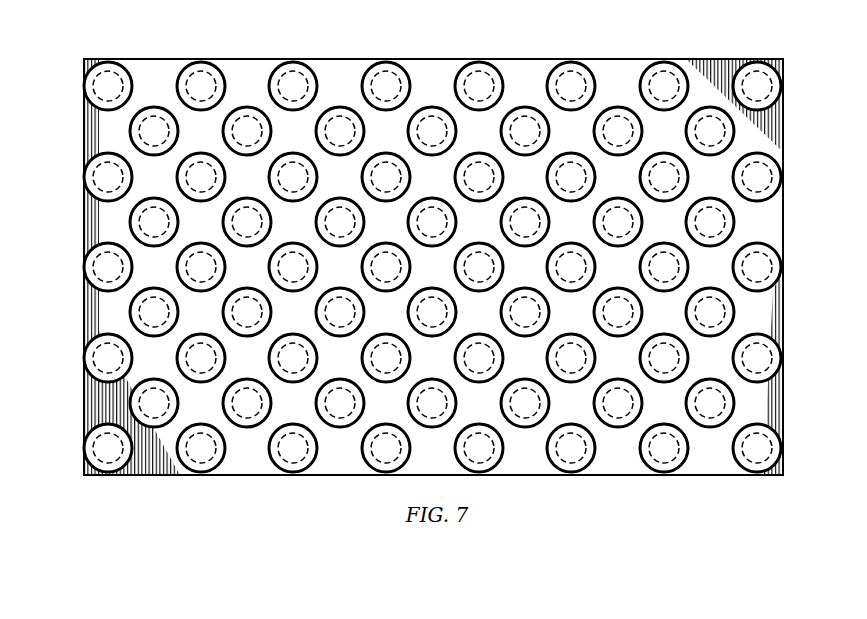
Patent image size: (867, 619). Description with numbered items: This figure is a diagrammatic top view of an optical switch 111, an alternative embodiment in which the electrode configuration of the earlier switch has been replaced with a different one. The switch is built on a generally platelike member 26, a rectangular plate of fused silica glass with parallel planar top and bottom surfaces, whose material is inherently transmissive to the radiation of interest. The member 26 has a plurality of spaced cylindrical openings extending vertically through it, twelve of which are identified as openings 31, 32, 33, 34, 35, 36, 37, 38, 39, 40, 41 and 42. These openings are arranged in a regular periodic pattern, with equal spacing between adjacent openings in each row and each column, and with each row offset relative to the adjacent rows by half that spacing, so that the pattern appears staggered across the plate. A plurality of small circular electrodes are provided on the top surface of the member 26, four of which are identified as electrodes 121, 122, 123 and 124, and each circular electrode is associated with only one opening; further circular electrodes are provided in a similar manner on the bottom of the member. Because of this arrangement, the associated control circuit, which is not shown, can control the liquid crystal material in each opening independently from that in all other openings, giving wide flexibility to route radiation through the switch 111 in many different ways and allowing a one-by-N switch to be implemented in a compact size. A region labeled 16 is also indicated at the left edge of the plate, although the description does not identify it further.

The substrate 16 is at (407, 239).
The platelike member 26 is at (83, 312).
The optical switch 111 is at (712, 55).
The circular electrode 121 is at (137, 60).
The circular electrode 122 is at (229, 60).
The circular electrode 123 is at (321, 60).
The circular electrode 124 is at (414, 60).
The cylindrical opening 31 is at (166, 220).
The cylindrical opening 32 is at (259, 220).
The cylindrical opening 33 is at (352, 220).
The cylindrical opening 34 is at (444, 220).
The cylindrical opening 35 is at (537, 220).
The cylindrical opening 36 is at (630, 220).
The cylindrical opening 37 is at (259, 310).
The cylindrical opening 38 is at (259, 401).
The cylindrical opening 39 is at (444, 310).
The cylindrical opening 40 is at (444, 401).
The cylindrical opening 41 is at (630, 310).
The cylindrical opening 42 is at (630, 401).